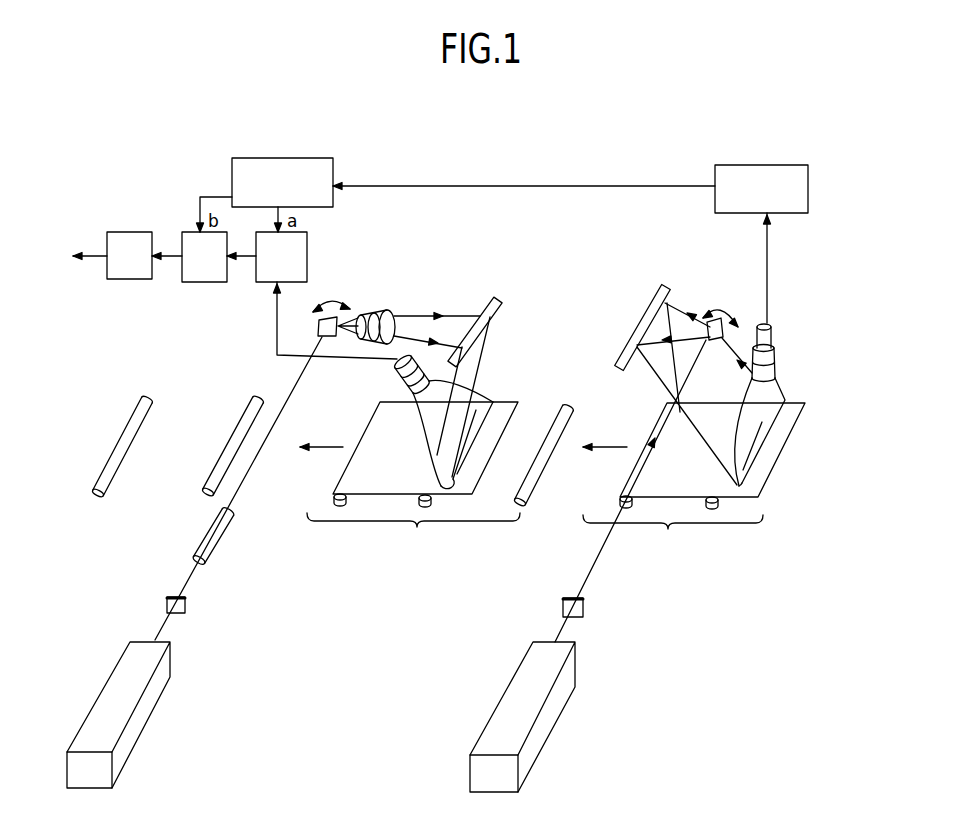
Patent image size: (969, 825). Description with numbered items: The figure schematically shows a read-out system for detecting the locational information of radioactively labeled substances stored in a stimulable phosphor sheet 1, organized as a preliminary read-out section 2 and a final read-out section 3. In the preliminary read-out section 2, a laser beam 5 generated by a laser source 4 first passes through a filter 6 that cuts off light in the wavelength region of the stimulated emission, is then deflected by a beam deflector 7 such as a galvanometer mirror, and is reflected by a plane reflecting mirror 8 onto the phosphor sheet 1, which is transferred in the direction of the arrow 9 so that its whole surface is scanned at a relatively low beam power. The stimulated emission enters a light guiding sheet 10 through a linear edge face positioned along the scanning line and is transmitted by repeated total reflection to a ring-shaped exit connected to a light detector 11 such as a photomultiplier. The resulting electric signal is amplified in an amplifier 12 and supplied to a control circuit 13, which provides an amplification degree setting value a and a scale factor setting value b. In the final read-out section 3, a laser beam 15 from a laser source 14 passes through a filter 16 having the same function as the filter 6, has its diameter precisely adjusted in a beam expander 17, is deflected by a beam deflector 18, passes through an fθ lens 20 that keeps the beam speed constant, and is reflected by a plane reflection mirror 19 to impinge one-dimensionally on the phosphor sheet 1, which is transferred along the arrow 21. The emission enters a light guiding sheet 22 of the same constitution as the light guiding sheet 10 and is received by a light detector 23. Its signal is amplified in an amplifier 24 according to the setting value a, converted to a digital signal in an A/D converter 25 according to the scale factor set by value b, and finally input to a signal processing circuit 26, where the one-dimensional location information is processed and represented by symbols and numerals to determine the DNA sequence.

The stimulable phosphor sheet 1 is at (485, 450).
The preliminary read-out section 2 is at (673, 553).
The final read-out section 3 is at (413, 552).
The laser source 4 is at (543, 718).
The laser beam 5 is at (565, 620).
The filter 6 is at (583, 605).
The beam deflector 7 is at (717, 317).
The plane reflecting mirror 8 is at (653, 293).
The arrow 9 is at (603, 447).
The light guiding sheet 10 is at (768, 400).
The light detector 11 is at (775, 350).
The amplifier 12 is at (752, 170).
The control circuit 13 is at (245, 162).
The laser source 14 is at (147, 713).
The laser beam 15 is at (168, 623).
The filter 16 is at (185, 603).
The beam expander 17 is at (212, 550).
The beam deflector 18 is at (346, 316).
The plane reflection mirror 19 is at (498, 303).
The fθ lens 20 is at (388, 316).
The arrow 21 is at (323, 448).
The light guiding sheet 22 is at (490, 400).
The light detector 23 is at (403, 380).
The amplifier 24 is at (267, 278).
The A/D converter 25 is at (190, 278).
The signal processing circuit 26 is at (112, 245).